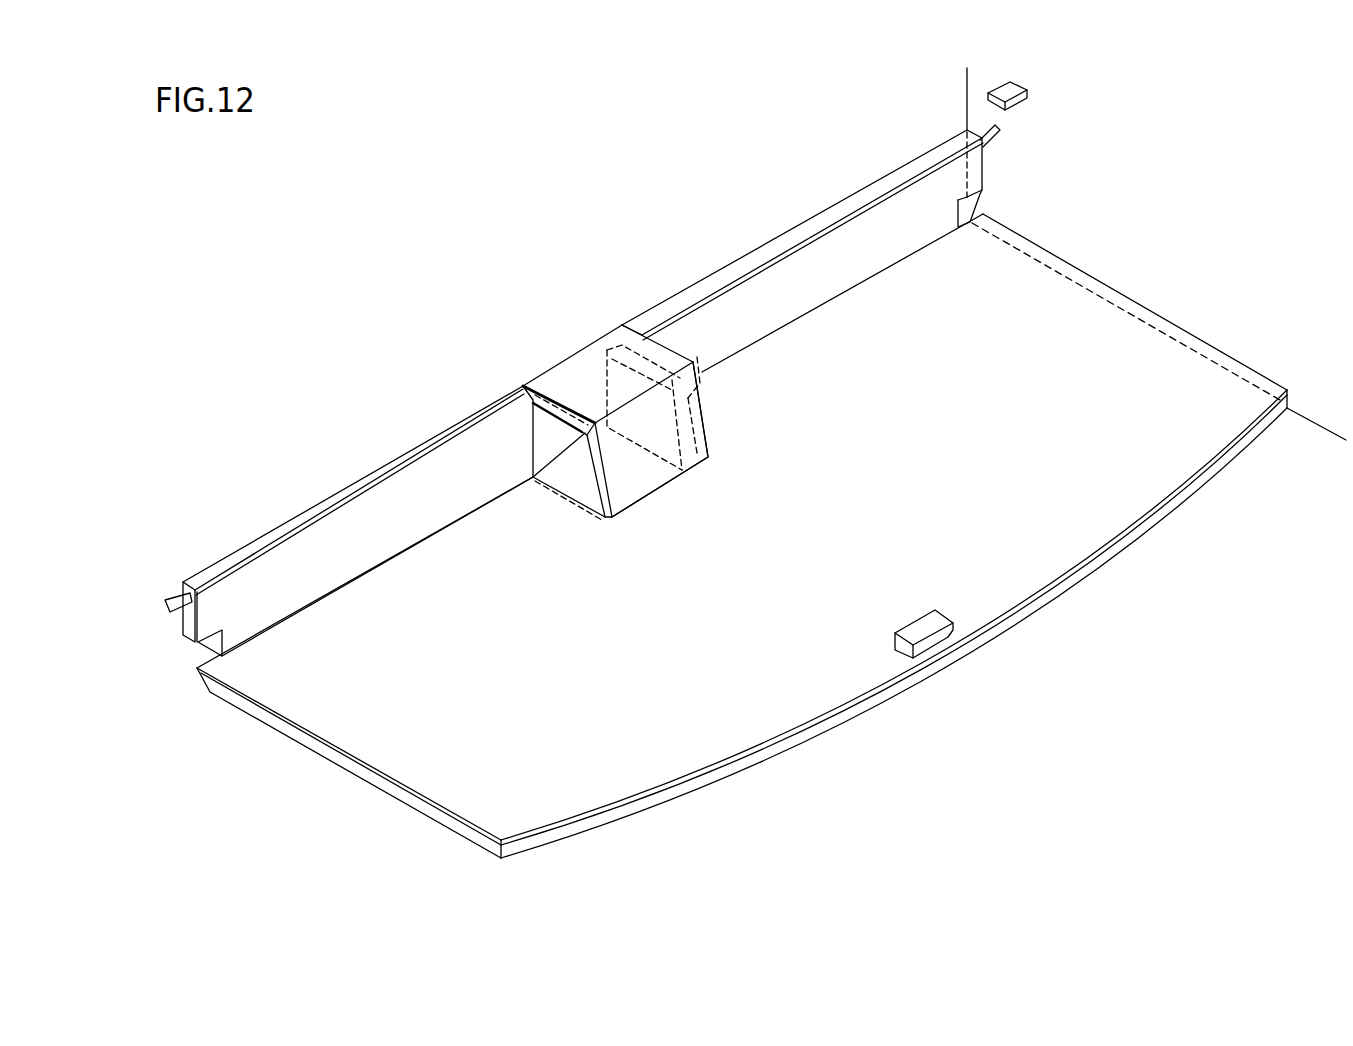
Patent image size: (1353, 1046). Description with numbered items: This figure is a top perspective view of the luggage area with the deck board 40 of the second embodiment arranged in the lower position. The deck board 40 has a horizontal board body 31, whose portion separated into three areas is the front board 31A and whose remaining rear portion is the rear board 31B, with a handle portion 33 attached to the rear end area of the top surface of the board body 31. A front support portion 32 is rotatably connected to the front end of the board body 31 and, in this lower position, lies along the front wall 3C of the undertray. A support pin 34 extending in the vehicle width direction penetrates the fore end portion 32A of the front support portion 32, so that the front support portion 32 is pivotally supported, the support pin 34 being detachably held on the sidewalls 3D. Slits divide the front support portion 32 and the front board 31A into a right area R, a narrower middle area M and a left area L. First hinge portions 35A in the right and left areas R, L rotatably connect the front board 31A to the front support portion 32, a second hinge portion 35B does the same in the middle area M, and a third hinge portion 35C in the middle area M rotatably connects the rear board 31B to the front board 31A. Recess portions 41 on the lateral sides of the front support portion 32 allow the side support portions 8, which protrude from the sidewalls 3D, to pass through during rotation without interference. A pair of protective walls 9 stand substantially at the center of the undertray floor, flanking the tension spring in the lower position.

The side support portions 8 is at (1013, 80).
The protective walls 9 is at (556, 452).
The board body 31 is at (458, 757).
The front board 31A is at (607, 447).
The rear board 31B is at (820, 690).
The front support portion 32 is at (808, 270).
The fore end portion 32A is at (268, 531).
The handle portion 33 is at (930, 627).
The support pin 34 is at (176, 598).
The first hinge portions 35A is at (446, 528).
The second hinge portion 35B is at (620, 453).
The third hinge portion 35C is at (653, 490).
The deck board 40 is at (724, 172).
The recess portions 41 is at (209, 640).
The left area L is at (351, 412).
The middle area M is at (531, 257).
The right area R is at (846, 115).
The front wall 3C is at (420, 358).
The sidewalls 3D is at (1188, 206).